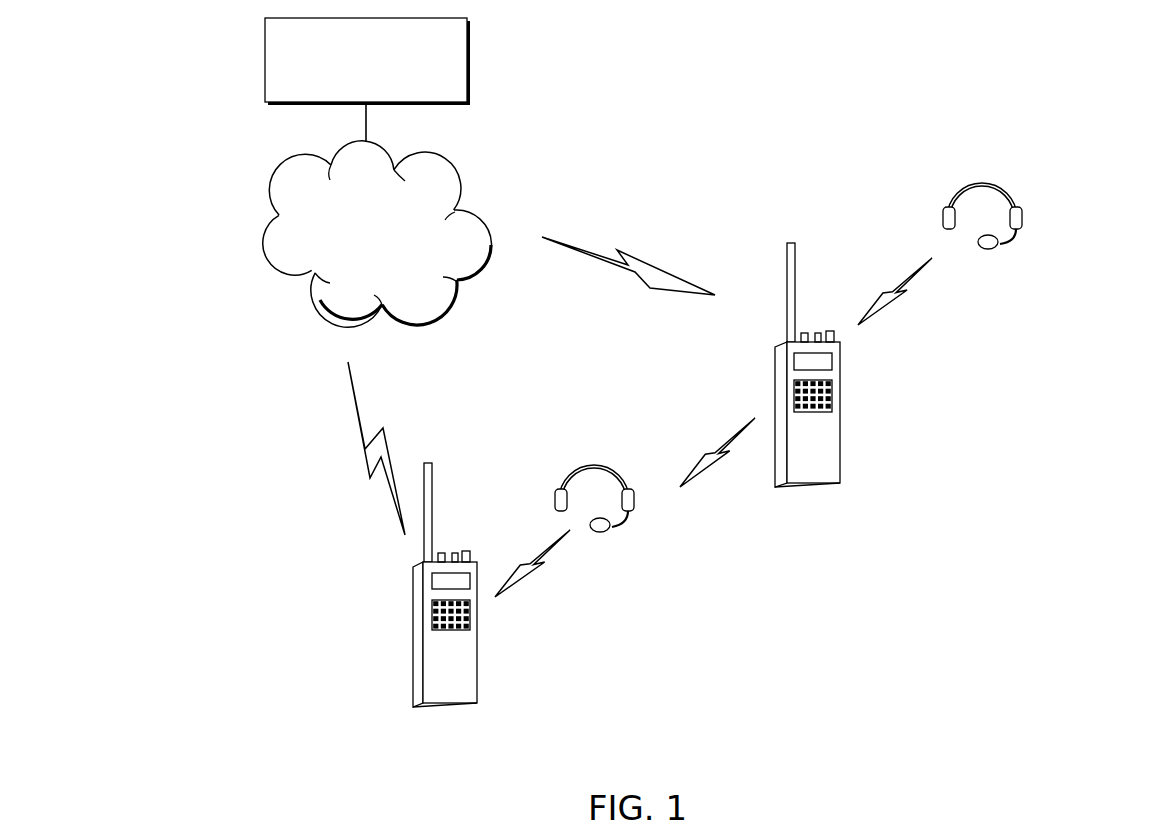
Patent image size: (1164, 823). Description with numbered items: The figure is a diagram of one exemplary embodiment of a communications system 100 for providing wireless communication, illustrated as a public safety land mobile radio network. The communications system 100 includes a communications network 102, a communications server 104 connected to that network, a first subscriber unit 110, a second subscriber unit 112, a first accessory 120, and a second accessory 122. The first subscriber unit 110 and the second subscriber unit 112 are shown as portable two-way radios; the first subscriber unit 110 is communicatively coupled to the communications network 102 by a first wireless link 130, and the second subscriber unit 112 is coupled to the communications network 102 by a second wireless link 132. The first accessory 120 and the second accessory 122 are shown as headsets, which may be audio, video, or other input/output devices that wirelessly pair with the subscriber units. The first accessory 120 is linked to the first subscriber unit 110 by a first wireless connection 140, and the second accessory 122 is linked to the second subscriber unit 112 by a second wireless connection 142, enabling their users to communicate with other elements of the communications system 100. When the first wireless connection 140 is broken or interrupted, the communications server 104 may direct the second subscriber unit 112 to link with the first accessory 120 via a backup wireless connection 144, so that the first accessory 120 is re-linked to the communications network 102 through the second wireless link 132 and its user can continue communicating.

The communications system 100 is at (992, 101).
The communications network 102 is at (264, 246).
The communications server 104 is at (264, 58).
The first subscriber unit 110 is at (413, 631).
The second subscriber unit 112 is at (775, 392).
The first accessory 120 is at (556, 499).
The second accessory 122 is at (955, 197).
The first wireless link 130 is at (363, 444).
The second wireless link 132 is at (608, 273).
The first wireless connection 140 is at (540, 571).
The second wireless connection 142 is at (900, 294).
The backup wireless connection 144 is at (720, 444).